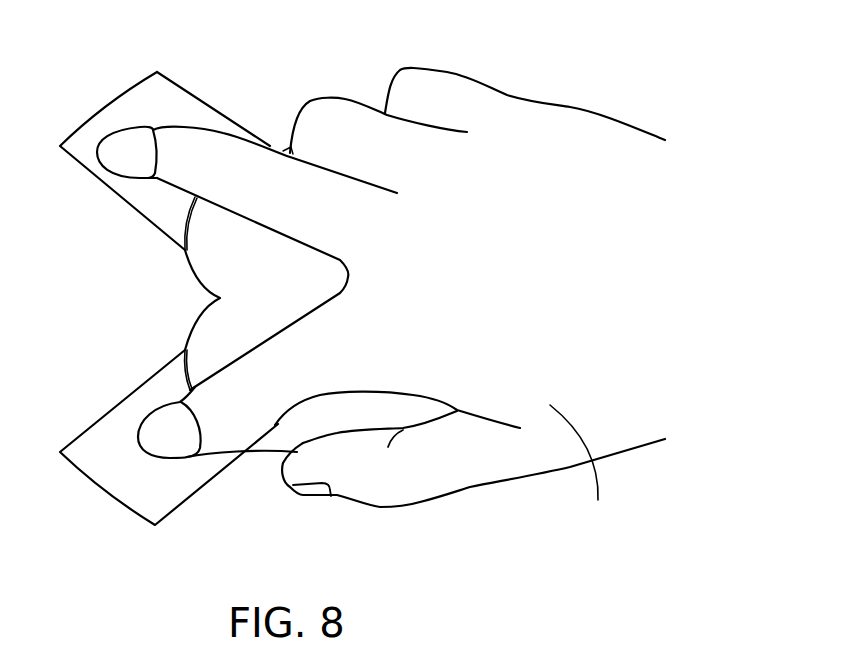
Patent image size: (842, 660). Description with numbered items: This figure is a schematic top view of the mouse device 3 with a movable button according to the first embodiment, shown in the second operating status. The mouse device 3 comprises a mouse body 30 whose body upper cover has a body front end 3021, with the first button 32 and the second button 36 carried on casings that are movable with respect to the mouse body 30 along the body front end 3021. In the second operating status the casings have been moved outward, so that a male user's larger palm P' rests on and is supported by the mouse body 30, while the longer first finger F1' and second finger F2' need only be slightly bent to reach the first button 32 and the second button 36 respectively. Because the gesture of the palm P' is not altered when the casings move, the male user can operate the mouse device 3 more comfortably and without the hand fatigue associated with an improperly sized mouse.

The mouse device 3 is at (283, 95).
The mouse body 30 is at (352, 425).
The first button 32 is at (108, 483).
The second button 36 is at (122, 110).
The body front end 3021 is at (225, 279).
The first finger F1' is at (217, 461).
The second finger F2' is at (247, 128).
The palm P' is at (577, 467).